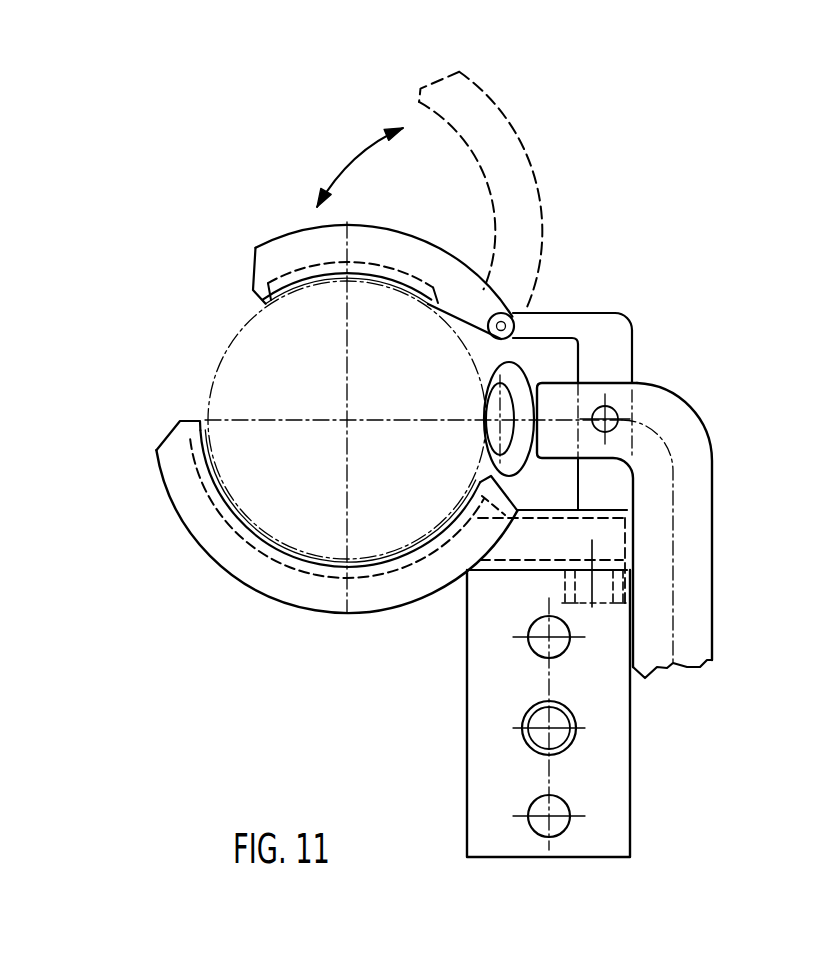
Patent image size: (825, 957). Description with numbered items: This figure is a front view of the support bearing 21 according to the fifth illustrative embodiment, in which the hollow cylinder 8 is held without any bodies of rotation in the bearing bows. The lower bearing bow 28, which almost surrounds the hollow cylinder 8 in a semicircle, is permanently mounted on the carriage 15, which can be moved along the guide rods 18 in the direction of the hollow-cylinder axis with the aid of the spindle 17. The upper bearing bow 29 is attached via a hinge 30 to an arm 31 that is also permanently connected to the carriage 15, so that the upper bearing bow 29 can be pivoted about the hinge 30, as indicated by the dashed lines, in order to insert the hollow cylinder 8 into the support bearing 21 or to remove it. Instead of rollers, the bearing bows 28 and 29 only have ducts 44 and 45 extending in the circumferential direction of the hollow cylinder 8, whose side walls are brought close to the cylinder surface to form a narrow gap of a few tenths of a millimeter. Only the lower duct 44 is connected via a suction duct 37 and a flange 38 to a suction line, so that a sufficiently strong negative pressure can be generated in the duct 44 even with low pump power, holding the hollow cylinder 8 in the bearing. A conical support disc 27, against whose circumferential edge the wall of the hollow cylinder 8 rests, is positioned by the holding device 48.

The hollow cylinder 8 is at (227, 352).
The carriage 15 is at (589, 694).
The spindle 17 is at (610, 740).
The guide rods 18 is at (540, 813).
The support bearing 21 is at (227, 593).
The support disc 27 is at (513, 386).
The lower bearing bow 28 is at (190, 513).
The upper bearing bow 29 is at (277, 257).
The hinge 30 is at (523, 313).
The arm 31 is at (615, 368).
The suction duct 37 is at (625, 543).
The flange 38 is at (630, 608).
The lower duct 44 is at (307, 563).
The upper duct 45 is at (377, 273).
The holding device 48 is at (690, 447).